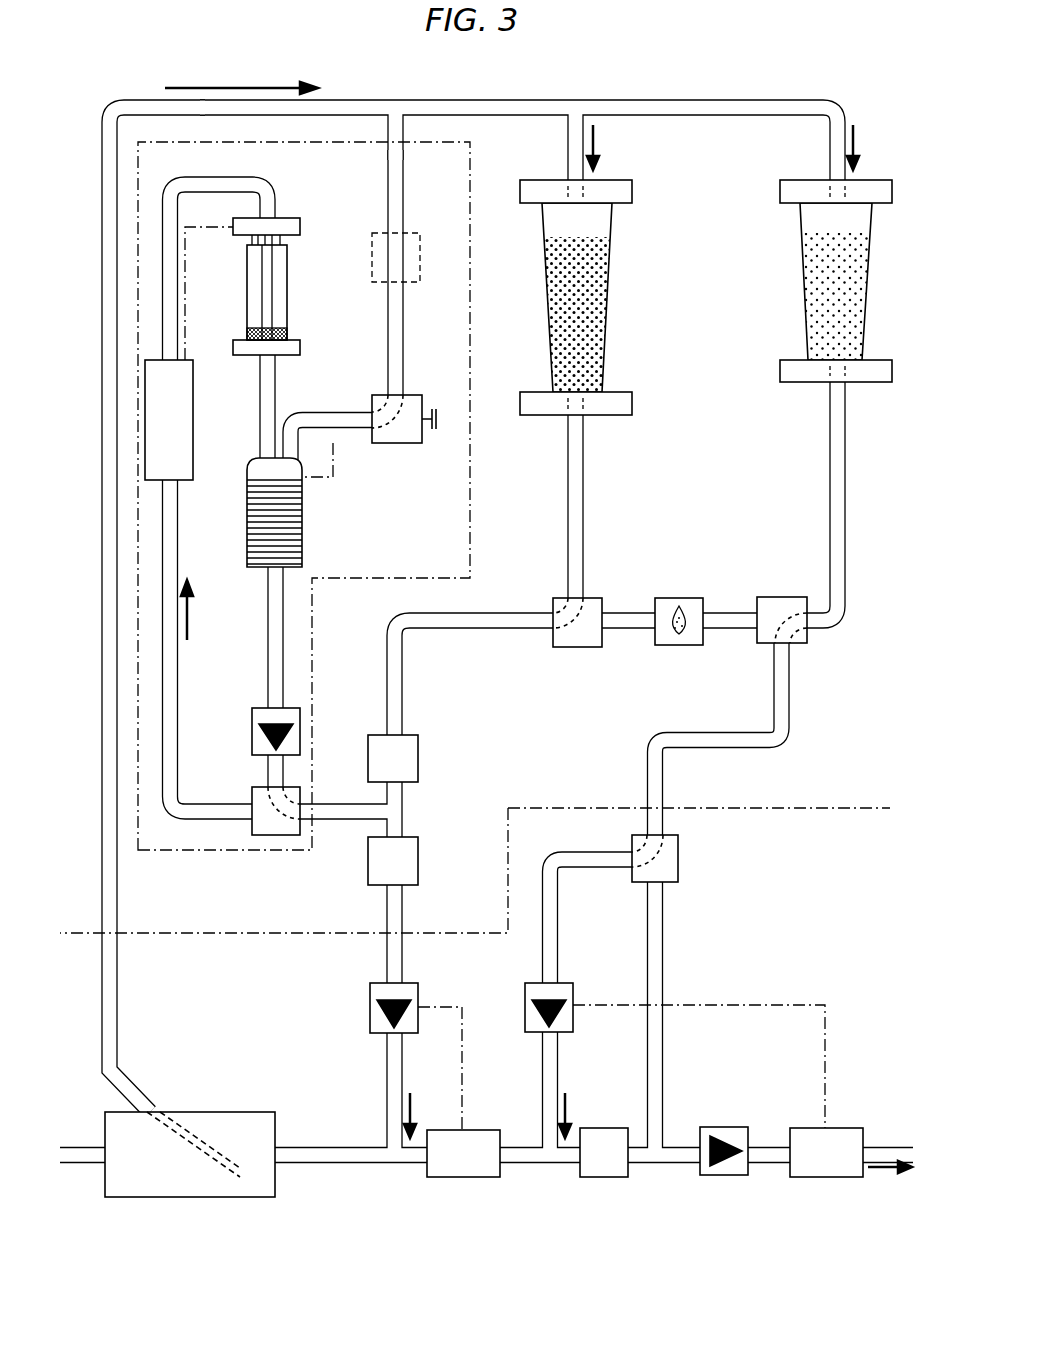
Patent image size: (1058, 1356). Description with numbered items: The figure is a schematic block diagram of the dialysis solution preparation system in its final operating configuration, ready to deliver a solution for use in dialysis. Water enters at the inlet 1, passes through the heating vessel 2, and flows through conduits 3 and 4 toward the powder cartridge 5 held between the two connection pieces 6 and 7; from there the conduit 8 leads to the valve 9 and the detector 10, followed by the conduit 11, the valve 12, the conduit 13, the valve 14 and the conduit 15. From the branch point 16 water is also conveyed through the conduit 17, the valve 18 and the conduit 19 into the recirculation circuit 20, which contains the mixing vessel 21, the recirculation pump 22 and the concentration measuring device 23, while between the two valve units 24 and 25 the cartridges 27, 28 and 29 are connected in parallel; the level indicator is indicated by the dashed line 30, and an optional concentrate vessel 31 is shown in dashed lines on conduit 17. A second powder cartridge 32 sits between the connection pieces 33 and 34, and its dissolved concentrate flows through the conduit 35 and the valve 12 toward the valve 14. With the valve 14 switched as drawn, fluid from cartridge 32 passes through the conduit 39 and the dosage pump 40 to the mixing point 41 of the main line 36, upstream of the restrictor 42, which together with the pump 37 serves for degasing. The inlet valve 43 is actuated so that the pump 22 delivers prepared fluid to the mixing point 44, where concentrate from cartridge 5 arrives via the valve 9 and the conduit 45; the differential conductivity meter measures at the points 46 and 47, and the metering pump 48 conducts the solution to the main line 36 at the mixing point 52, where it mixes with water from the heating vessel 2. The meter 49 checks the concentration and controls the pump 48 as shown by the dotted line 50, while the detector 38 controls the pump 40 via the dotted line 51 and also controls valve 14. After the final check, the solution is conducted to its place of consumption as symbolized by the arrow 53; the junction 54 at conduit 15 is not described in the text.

The inlet 1 is at (85, 1165).
The heating vessel 2 is at (222, 1112).
The conduit 3 is at (117, 905).
The conduit 4 is at (536, 100).
The powder cartridge 5 is at (608, 325).
The connection piece 6 is at (610, 180).
The connection piece 7 is at (618, 392).
The conduit 8 is at (583, 505).
The valve 9 is at (596, 598).
The detector 10 is at (657, 645).
The conduit 11 is at (718, 613).
The valve 12 is at (776, 597).
The conduit 13 is at (789, 692).
The valve 14 is at (678, 850).
The conduit 15 is at (664, 975).
The branch point 16 is at (396, 104).
The conduit 17 is at (404, 195).
The valve 18 is at (414, 395).
The conduit 19 is at (318, 412).
The recirculation circuit 20 is at (128, 585).
The mixing vessel 21 is at (247, 535).
The recirculation pump 22 is at (252, 710).
The concentration measuring device 23 is at (193, 420).
The valve unit 24 is at (300, 218).
The valve unit 25 is at (300, 340).
The cartridge 27 is at (272, 262).
The cartridge 28 is at (265, 292).
The vessel 29 is at (253, 322).
The dashed line 30 is at (333, 468).
The vessel 31 is at (372, 272).
The powder cartridge 32 is at (862, 300).
The connection piece 33 is at (878, 180).
The connection piece 34 is at (875, 360).
The conduit 35 is at (846, 495).
The main line 36 is at (336, 1148).
The pump 37 is at (712, 1175).
The detector 38 is at (822, 1177).
The conduit 39 is at (558, 930).
The dosage pump 40 is at (574, 983).
The mixing point 41 is at (548, 1162).
The restrictor 42 is at (593, 1177).
The inlet valve 43 is at (252, 790).
The mixing point 44 is at (397, 808).
The conduit 45 is at (403, 685).
The measuring point 46 is at (418, 737).
The measuring point 47 is at (368, 865).
The pump 48 is at (418, 983).
The meter 49 is at (453, 1177).
The dotted line 50 is at (463, 1065).
The dotted line 51 is at (826, 1040).
The mixing point 52 is at (393, 1162).
The arrow 53 is at (910, 1148).
The pipe junction 54 is at (653, 1162).